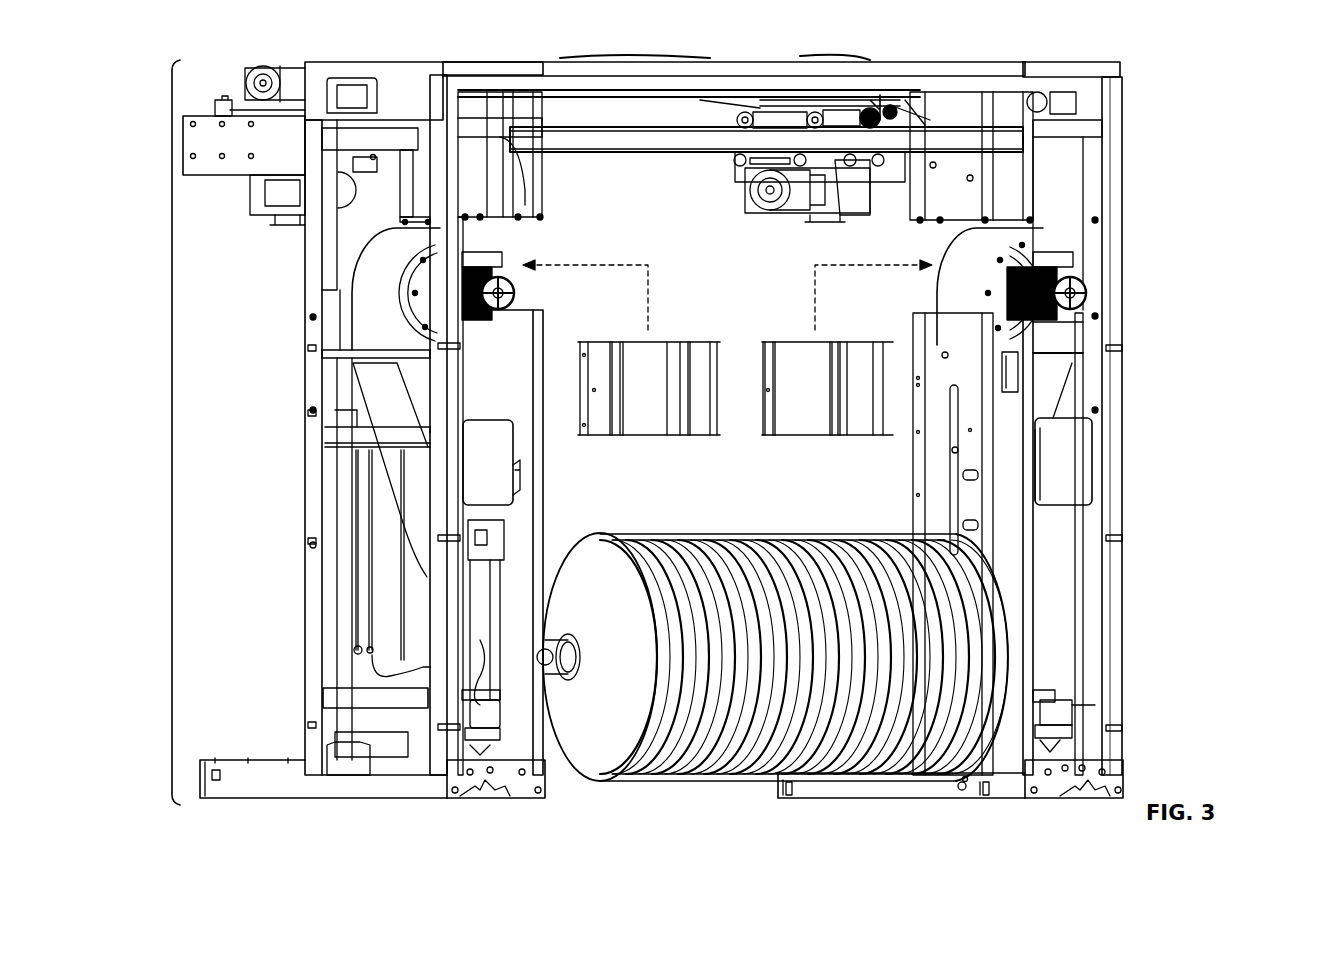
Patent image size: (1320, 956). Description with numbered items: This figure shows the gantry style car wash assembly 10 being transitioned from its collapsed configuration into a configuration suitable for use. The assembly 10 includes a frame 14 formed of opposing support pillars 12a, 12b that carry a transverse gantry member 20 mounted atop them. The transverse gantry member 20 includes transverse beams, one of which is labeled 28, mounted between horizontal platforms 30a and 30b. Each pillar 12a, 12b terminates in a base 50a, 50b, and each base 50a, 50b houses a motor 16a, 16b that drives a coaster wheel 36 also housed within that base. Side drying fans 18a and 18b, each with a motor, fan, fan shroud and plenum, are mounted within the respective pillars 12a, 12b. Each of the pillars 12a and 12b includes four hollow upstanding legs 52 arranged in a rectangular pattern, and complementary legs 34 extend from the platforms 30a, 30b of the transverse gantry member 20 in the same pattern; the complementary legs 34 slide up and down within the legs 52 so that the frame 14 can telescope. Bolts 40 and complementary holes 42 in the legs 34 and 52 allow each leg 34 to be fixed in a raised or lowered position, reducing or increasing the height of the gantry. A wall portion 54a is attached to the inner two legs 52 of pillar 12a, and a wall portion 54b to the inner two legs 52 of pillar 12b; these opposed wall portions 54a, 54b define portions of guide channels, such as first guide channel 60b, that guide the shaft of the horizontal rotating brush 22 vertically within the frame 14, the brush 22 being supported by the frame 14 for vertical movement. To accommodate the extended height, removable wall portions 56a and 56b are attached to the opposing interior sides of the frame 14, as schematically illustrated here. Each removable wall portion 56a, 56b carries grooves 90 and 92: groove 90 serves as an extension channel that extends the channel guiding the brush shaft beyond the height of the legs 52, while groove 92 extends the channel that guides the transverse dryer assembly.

The gantry style car wash assembly 10 is at (1168, 96).
The support pillar 12a is at (540, 508).
The support pillar 12b is at (1122, 582).
The frame 14 is at (172, 432).
The motor 16a is at (492, 713).
The motor 16b is at (1092, 714).
The side drying fan 18a is at (512, 286).
The side drying fan 18b is at (1088, 292).
The transverse gantry member 20 is at (688, 118).
The horizontal rotating brush 22 is at (587, 762).
The top rail 28 is at (640, 75).
The horizontal platform 30a is at (312, 65).
The horizontal platform 30b is at (1078, 62).
The complementary leg 34 is at (313, 200).
The coaster wheel 36 is at (478, 800).
The bolt 40 is at (312, 410).
The complementary hole 42 is at (313, 320).
The base 50a is at (368, 785).
The base 50b is at (1005, 787).
The upstanding leg 52 is at (312, 655).
The wall portion 54a is at (525, 457).
The wall portion 54b is at (925, 472).
The removable wall portion 56a is at (665, 333).
The removable wall portion 56b is at (794, 333).
The first guide channel 60b is at (985, 498).
The groove 90 is at (616, 348).
The groove 92 is at (684, 348).